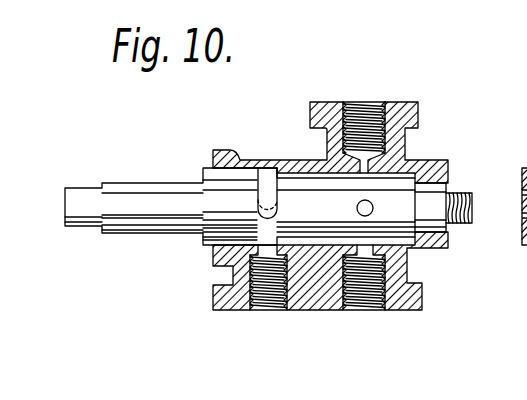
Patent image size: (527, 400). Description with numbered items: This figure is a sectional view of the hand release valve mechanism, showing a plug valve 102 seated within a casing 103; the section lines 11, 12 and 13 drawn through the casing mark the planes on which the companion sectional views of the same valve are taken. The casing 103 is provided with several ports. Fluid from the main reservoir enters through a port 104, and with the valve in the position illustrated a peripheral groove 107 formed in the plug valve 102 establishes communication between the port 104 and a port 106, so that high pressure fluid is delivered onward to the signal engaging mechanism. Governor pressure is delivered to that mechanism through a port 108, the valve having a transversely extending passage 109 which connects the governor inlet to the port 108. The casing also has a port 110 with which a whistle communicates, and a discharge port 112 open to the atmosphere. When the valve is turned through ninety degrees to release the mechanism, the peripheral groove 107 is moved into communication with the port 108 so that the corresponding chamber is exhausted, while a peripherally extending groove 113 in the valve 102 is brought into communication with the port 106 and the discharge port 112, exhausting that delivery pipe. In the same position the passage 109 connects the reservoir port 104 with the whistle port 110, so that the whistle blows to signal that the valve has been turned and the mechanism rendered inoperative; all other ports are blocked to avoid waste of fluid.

The section line 11- 11 is at (364, 100).
The section line 12-12 (shaft axis) 12 is at (483, 209).
The section line 13- 13 is at (267, 200).
The plug valve 102 is at (402, 190).
The casing 103 is at (419, 110).
The port 104 is at (373, 307).
The port 106 is at (257, 307).
The peripheral groove 107 is at (324, 233).
The port 108 is at (521, 218).
The transversely extending passage 109 is at (366, 210).
The port 110 is at (374, 107).
The discharge port 112 is at (263, 202).
The peripherally extending groove 113 is at (272, 182).